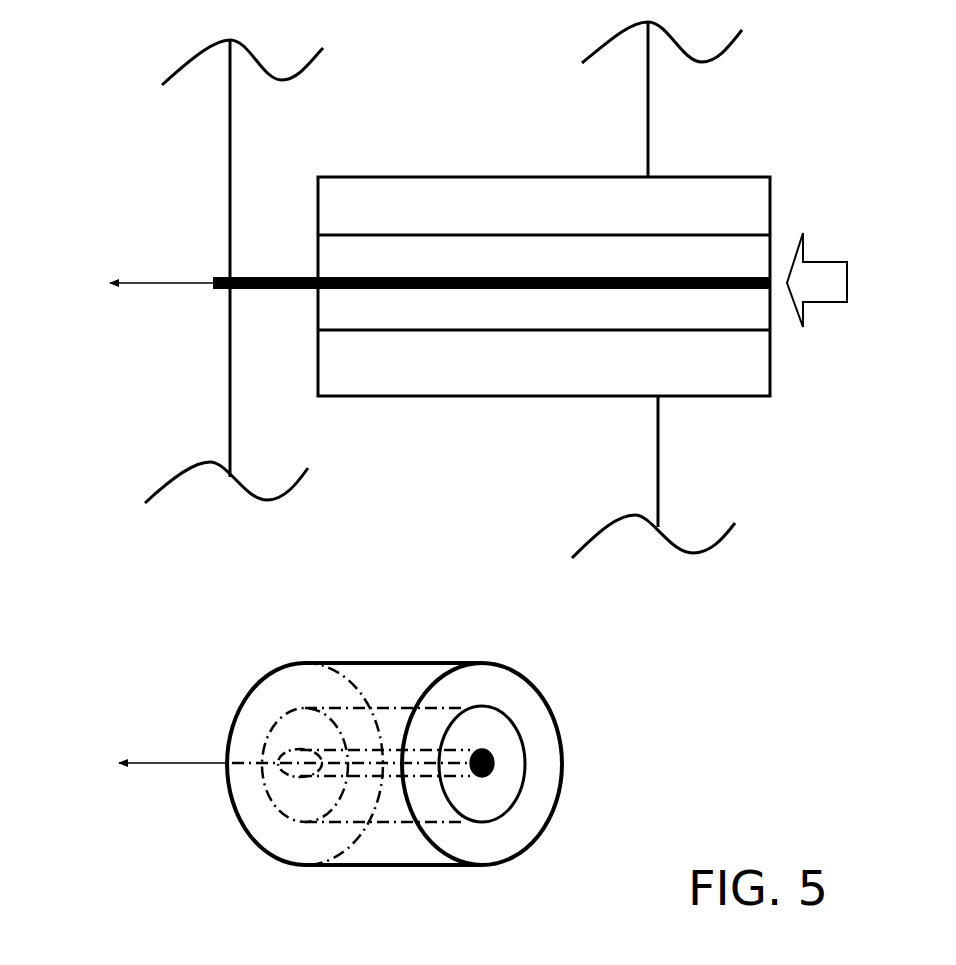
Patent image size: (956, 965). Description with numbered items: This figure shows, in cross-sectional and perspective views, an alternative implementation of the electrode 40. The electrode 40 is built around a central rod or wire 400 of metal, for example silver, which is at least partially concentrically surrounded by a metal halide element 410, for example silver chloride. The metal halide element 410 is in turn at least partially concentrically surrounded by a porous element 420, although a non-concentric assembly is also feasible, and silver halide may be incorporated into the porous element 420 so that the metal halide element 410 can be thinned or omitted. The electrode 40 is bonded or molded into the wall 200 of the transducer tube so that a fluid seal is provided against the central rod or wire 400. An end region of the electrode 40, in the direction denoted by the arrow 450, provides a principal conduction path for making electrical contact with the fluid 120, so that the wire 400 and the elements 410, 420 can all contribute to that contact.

The electrode 40 is at (106, 430).
The fluid 120 is at (788, 116).
The wall 200 is at (438, 116).
The central rod or wire 400 is at (257, 288).
The metal halide element 410 is at (627, 269).
The porous element 420 is at (407, 214).
The arrow 450 is at (823, 282).